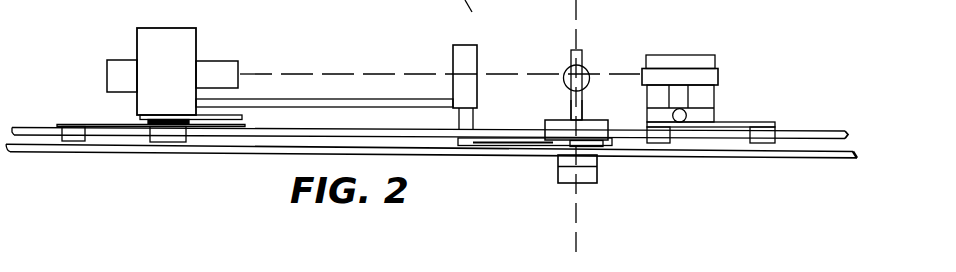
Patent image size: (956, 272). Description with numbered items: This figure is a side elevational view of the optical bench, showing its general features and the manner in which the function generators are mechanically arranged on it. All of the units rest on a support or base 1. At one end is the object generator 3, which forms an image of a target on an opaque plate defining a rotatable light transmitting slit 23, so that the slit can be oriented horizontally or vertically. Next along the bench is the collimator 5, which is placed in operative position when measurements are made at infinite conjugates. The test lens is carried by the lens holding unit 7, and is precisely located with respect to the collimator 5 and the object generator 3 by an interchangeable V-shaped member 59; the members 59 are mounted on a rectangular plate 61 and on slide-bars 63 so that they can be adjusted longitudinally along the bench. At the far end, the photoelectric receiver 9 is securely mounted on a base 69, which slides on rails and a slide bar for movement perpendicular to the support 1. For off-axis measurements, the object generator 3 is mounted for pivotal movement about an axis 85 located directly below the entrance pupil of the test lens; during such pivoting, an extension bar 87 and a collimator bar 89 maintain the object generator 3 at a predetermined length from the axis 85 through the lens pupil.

The support or base 1 is at (97, 158).
The object generator 3 is at (212, 42).
The collimator 5 is at (485, 96).
The lens holding unit 7 is at (592, 56).
The photoelectric receiver 9 is at (726, 56).
The light transmitting slit 23 is at (245, 70).
The interchangeable V-shaped member 59 is at (568, 104).
The rectangular plate 61 is at (590, 125).
The slide-bar 63 is at (805, 130).
The base 69 is at (755, 124).
The axis 85 is at (580, 6).
The extension bar 87 is at (312, 101).
The collimator bar 89 is at (492, 148).